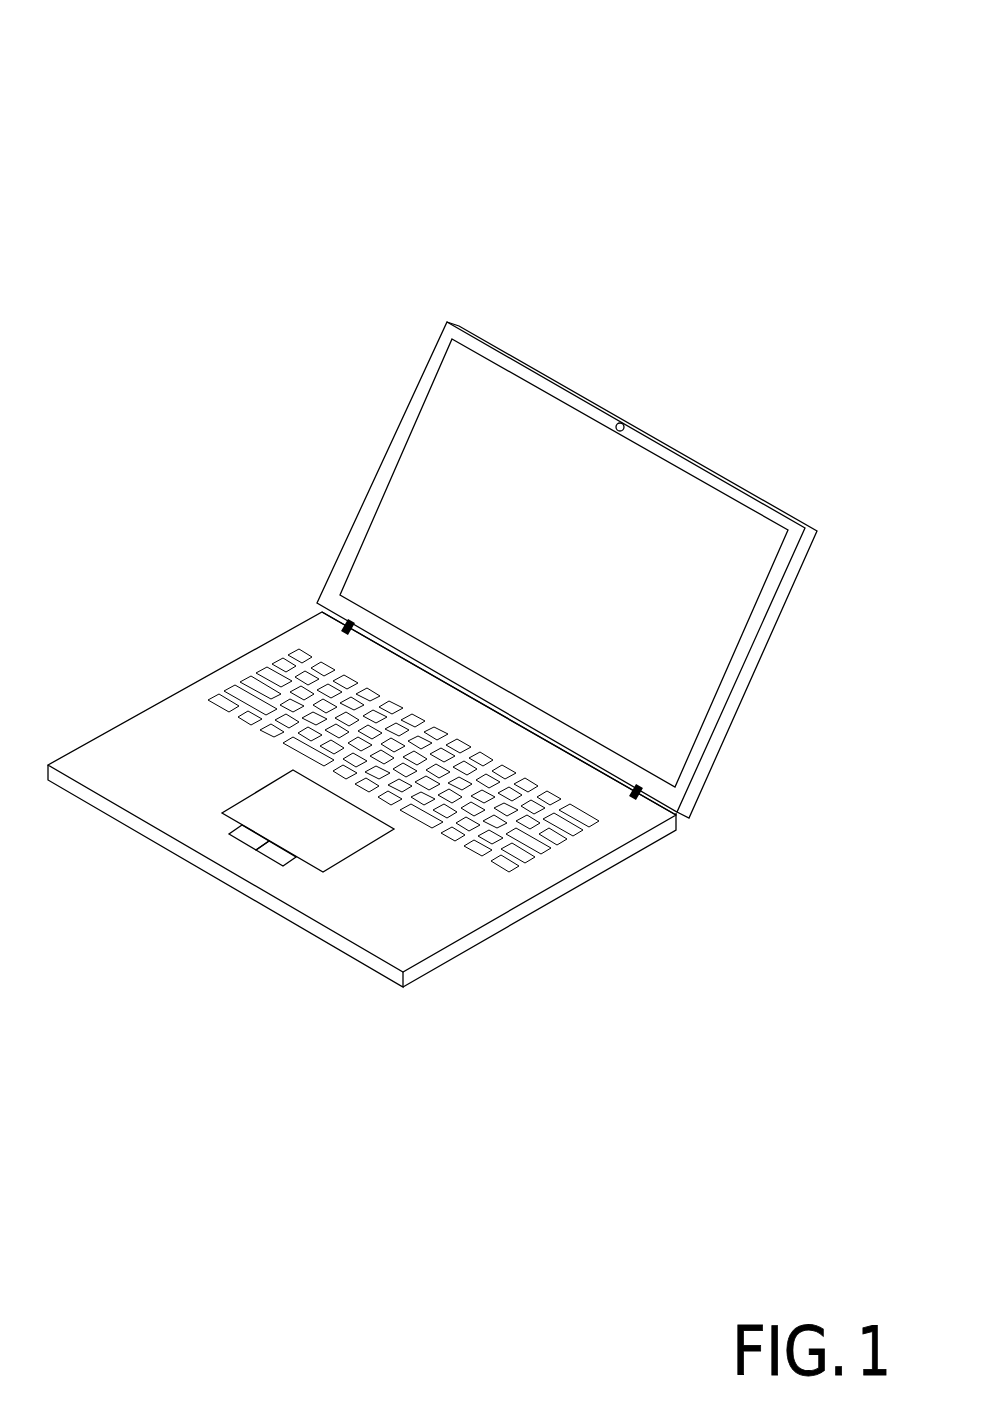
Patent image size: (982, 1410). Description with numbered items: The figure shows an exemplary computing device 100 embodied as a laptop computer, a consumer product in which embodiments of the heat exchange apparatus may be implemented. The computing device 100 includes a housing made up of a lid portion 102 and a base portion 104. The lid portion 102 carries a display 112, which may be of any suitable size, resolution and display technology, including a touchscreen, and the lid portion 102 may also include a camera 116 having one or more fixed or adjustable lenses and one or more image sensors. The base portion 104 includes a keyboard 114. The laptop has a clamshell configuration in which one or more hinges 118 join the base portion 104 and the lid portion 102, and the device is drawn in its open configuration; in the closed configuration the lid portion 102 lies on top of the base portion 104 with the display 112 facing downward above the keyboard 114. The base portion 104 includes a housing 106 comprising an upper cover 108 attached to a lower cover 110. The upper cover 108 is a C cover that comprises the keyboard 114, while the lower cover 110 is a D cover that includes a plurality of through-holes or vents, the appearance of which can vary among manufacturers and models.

The computing device 100 is at (59, 63).
The lid portion 102 is at (433, 350).
The base portion 104 is at (384, 973).
The housing 106 is at (120, 665).
The upper cover 108 is at (455, 917).
The lower cover 110 is at (420, 978).
The display 112 is at (438, 432).
The keyboard 114 is at (619, 838).
The camera 116 is at (621, 422).
The hinges 118 is at (342, 622).